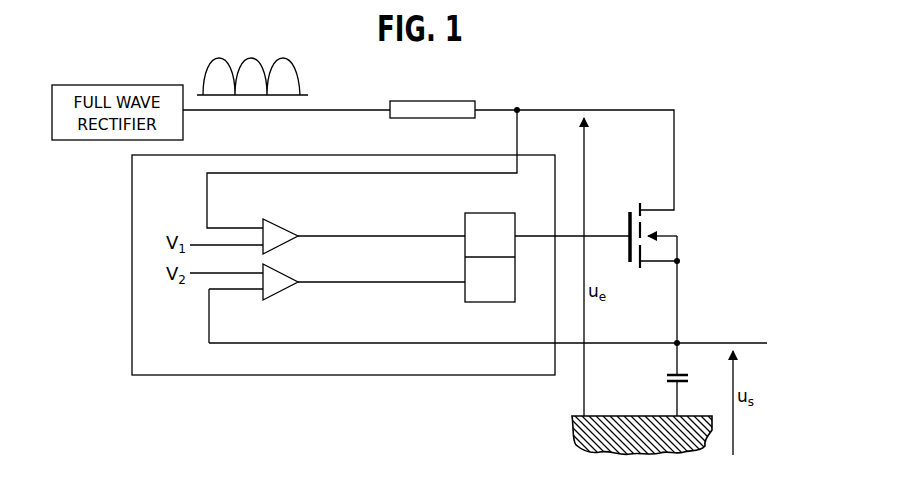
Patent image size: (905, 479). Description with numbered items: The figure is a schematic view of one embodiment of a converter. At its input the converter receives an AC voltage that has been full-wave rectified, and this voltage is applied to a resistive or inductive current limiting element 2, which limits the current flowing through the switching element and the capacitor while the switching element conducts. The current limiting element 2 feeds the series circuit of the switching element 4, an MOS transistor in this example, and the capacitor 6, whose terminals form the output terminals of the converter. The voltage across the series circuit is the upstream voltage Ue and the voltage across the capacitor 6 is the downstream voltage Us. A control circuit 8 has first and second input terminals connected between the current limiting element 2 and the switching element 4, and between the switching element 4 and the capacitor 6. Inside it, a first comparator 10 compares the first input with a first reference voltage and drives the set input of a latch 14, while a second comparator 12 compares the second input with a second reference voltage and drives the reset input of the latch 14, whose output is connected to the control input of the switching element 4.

The current limiting element 2 is at (430, 100).
The switching element 4 is at (660, 226).
The capacitor 6 is at (670, 376).
The control circuit 8 is at (302, 376).
The first comparator 10 is at (277, 221).
The second comparator 12 is at (284, 296).
The latch 14 is at (466, 214).